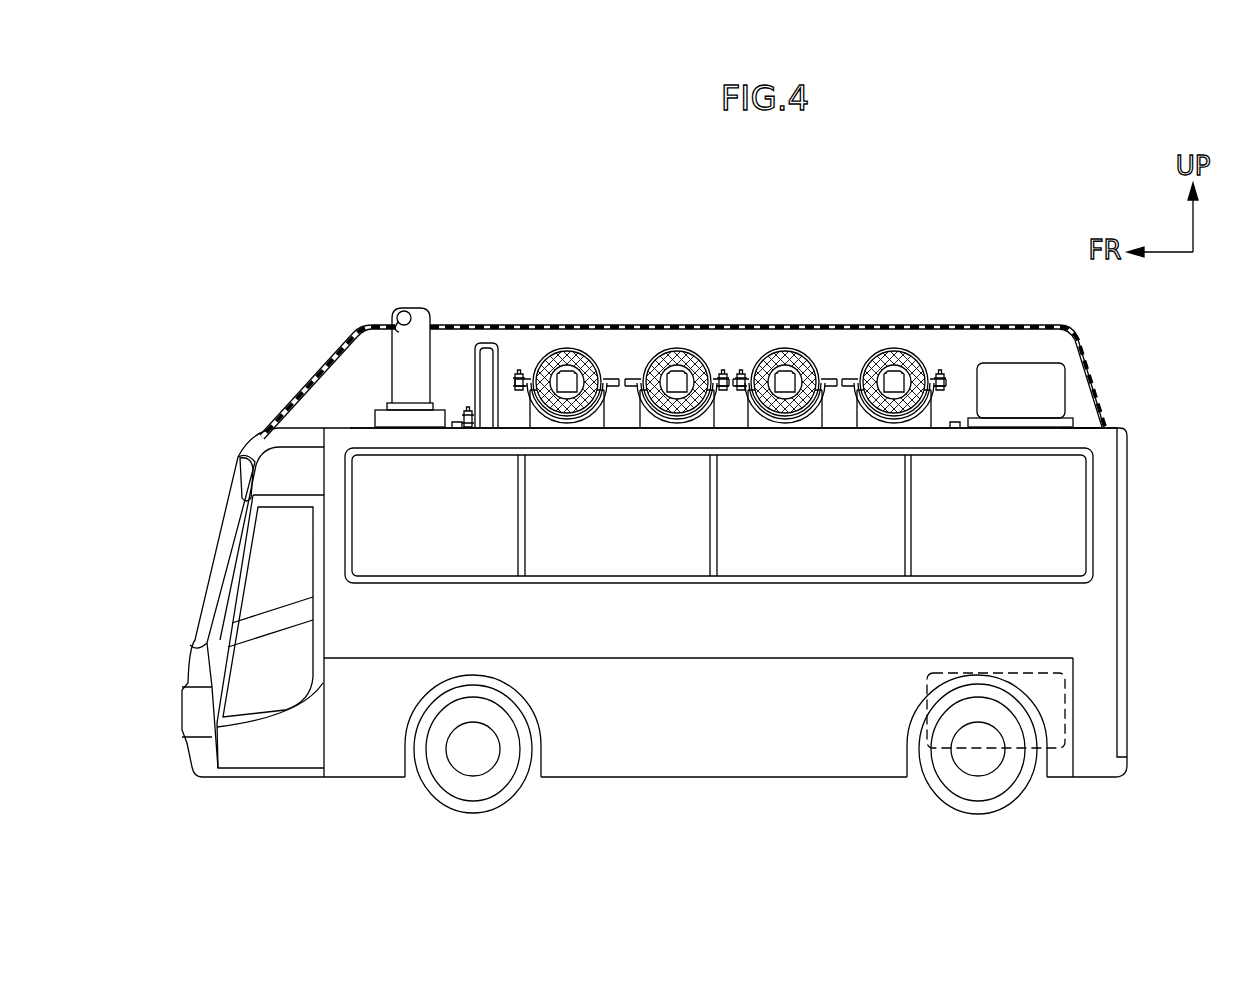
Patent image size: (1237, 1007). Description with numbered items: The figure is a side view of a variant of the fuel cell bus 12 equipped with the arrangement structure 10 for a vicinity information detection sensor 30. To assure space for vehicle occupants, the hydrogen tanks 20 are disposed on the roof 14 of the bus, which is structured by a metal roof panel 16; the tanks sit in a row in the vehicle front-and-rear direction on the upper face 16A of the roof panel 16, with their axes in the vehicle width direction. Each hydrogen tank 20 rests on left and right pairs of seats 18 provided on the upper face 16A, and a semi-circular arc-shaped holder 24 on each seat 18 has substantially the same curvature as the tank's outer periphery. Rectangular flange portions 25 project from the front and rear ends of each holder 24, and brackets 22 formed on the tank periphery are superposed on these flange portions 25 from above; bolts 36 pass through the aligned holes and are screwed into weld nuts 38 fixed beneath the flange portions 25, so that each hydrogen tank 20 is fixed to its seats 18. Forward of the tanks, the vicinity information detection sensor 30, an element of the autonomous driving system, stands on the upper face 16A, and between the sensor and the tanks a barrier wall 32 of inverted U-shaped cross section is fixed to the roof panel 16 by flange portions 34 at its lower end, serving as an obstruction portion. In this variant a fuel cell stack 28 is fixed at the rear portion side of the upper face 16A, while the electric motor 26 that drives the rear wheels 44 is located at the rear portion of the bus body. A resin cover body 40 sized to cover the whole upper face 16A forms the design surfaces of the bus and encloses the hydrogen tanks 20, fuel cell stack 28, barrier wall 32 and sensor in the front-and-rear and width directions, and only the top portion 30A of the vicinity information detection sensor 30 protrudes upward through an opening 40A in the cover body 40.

The arrangement structure 10 is at (462, 348).
The fuel cell bus 12 is at (810, 302).
The roof 14 is at (313, 422).
The roof panel 16 is at (347, 422).
The upper face of roof panel 16A is at (1090, 424).
The seat 18 is at (542, 428).
The hydrogen tank 20 is at (575, 350).
The bracket 22 is at (518, 372).
The holder 24 is at (580, 425).
The flange portion 25 is at (513, 428).
The electric motor 26 is at (1065, 713).
The fuel cell stack 28 is at (1030, 372).
The vicinity information detection sensor 30 is at (420, 306).
The top portion of vicinity information detection sensor 30A is at (408, 312).
The barrier wall 32 is at (488, 340).
The flange portion of barrier wall 34 is at (450, 430).
The bolt 36 is at (466, 412).
The weld nut 38 is at (740, 392).
The cover body 40 is at (1042, 325).
The opening 40A is at (398, 325).
The rear wheel 44 is at (1025, 790).